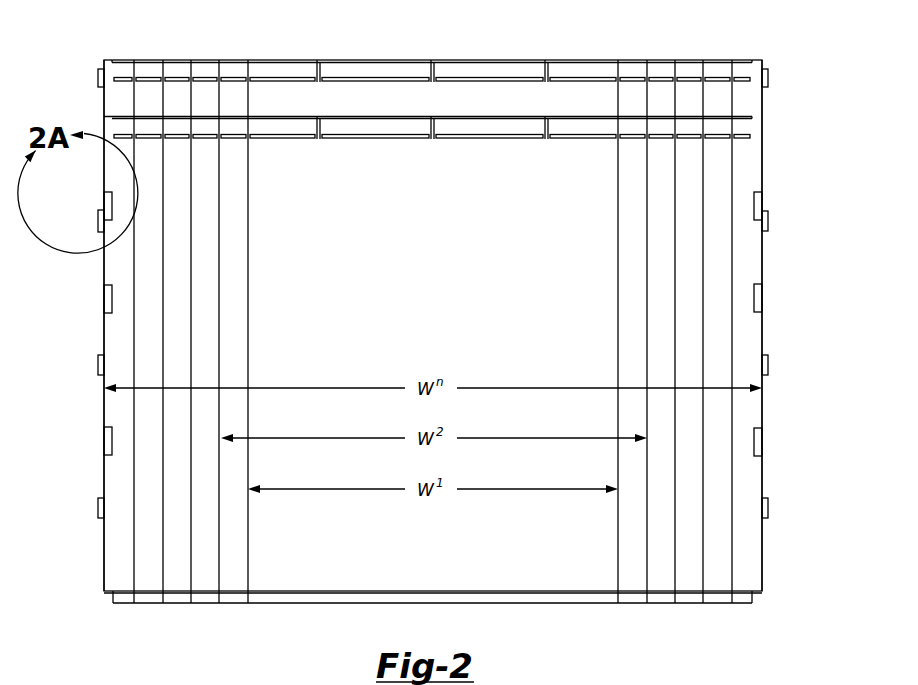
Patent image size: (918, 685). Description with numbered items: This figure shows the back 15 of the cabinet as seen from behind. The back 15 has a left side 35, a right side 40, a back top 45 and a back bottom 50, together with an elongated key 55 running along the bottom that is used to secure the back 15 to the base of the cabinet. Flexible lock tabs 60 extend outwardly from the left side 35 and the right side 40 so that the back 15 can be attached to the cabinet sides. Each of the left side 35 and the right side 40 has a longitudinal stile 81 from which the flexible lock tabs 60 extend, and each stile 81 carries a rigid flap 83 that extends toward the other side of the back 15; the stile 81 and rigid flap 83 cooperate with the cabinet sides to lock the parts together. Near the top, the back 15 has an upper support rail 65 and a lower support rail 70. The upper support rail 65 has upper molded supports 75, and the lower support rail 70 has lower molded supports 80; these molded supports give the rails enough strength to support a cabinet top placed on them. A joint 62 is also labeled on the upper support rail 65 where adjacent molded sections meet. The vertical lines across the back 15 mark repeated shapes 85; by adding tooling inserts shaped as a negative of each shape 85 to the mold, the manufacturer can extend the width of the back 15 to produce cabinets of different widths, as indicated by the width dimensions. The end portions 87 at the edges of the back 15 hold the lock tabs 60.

The back 15 is at (437, 308).
The left side 35 is at (75, 270).
The right side 40 is at (788, 271).
The back top 45 is at (428, 96).
The back bottom 50 is at (425, 590).
The elongated key 55 is at (525, 605).
The flexible lock tab 60 is at (98, 77).
The slat joint 62 is at (322, 68).
The upper support rail 65 is at (483, 60).
The lower support rail 70 is at (497, 117).
The upper molded supports 75 is at (470, 82).
The lower molded supports 80 is at (379, 140).
The longitudinal stile 81 is at (104, 169).
The rigid flap 83 is at (104, 200).
The shape 85 is at (633, 583).
The end portions 87 is at (121, 585).